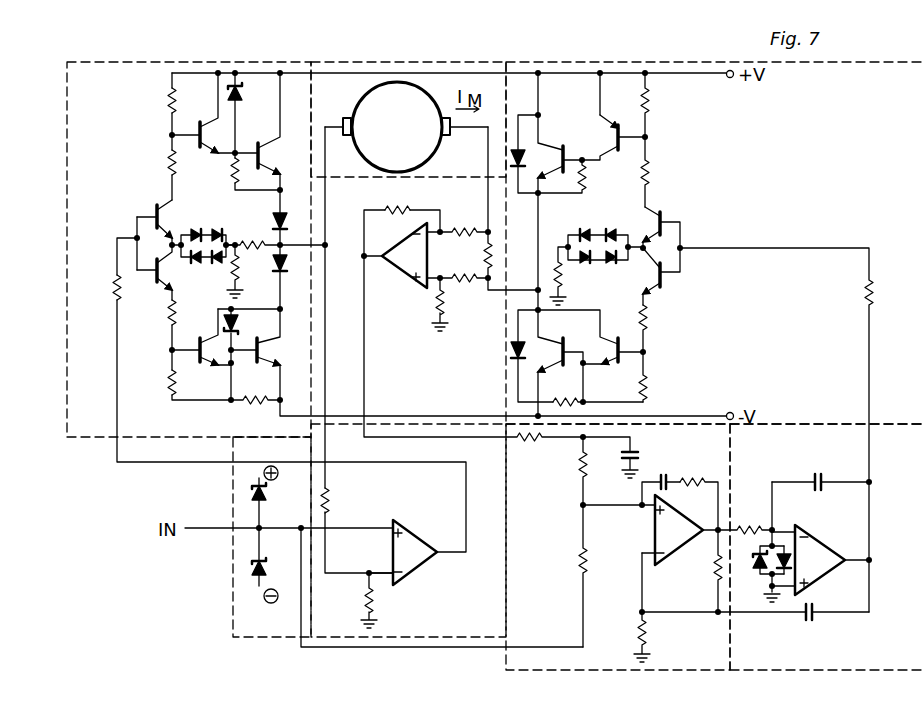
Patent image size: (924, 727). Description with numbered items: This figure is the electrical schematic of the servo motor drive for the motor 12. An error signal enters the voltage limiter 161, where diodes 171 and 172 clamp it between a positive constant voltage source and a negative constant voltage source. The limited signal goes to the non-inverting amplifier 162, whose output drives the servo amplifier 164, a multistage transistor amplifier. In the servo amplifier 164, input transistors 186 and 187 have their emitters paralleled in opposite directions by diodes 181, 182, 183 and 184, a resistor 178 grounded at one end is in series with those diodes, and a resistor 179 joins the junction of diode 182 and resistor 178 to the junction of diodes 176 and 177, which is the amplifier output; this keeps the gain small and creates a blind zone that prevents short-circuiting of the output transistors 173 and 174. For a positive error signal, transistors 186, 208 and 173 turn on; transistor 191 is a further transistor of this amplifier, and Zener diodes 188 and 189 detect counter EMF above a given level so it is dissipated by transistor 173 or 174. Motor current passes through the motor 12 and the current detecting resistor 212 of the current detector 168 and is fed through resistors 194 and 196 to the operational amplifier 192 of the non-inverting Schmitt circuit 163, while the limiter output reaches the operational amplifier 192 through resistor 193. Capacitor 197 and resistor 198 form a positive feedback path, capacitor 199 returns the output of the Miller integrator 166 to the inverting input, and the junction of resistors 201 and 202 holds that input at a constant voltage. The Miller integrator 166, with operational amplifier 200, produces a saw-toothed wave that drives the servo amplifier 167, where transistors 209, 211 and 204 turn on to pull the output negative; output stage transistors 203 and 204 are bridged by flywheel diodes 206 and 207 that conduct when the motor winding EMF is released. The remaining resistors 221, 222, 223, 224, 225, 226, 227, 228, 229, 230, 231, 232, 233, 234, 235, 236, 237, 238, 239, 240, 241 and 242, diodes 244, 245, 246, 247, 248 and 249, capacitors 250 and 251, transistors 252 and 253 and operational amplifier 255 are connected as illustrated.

The motor 12 is at (393, 80).
The voltage limiter circuit 161 is at (267, 644).
The non-inverting amplifier 162 is at (366, 642).
The non-inverting Schmitt trigger circuit 163 is at (658, 674).
The first servo amplifier 164 is at (100, 62).
The Miller integrator 166 is at (821, 674).
The second servo amplifier 167 is at (692, 62).
The current detector 168 is at (464, 62).
The diode 171 is at (252, 494).
The diode 172 is at (254, 576).
The transistor 173 is at (274, 148).
The transistor 174 is at (250, 344).
The diode 176 is at (290, 218).
The diode 177 is at (288, 264).
The resistor 178 is at (238, 278).
The resistor 179 is at (247, 240).
The diode 181 is at (192, 228).
The diode 182 is at (214, 228).
The diode 183 is at (192, 270).
The diode 184 is at (215, 268).
The input transistor 186 is at (154, 207).
The input transistor 187 is at (153, 264).
The Zener diode 188 is at (240, 80).
The Zener diode 189 is at (225, 324).
The transistor 191 is at (186, 350).
The operational amplifier 192 is at (656, 532).
The resistor 193 is at (578, 568).
The resistor 194 is at (515, 442).
The resistor 196 is at (577, 481).
The capacitor 197 is at (665, 478).
The resistor 198 is at (697, 475).
The capacitor 199 is at (812, 625).
The operational amplifier 200 is at (838, 542).
The resistor 201 is at (649, 636).
The resistor 202 is at (718, 584).
The output stage transistor 203 is at (567, 144).
The output stage transistor 204 is at (574, 347).
The flywheel diode 206 is at (508, 161).
The flywheel diode 207 is at (515, 360).
The transistor 208 is at (200, 120).
The transistor 209 is at (663, 282).
The transistor 211 is at (627, 349).
The current detecting resistor 212 is at (484, 262).
The resistor 221 is at (167, 98).
The resistor 222 is at (167, 156).
The resistor 223 is at (112, 286).
The resistor 224 is at (164, 316).
The resistor 225 is at (166, 390).
The resistor 226 is at (246, 151).
The resistor 227 is at (254, 398).
The resistor 228 is at (330, 498).
The resistor 229 is at (379, 603).
The resistor 230 is at (392, 208).
The resistor 231 is at (462, 230).
The resistor 232 is at (474, 286).
The resistor 233 is at (430, 305).
The resistor 234 is at (649, 108).
The resistor 235 is at (646, 168).
The resistor 236 is at (591, 168).
The resistor 237 is at (525, 294).
The resistor 238 is at (647, 314).
The resistor 239 is at (647, 386).
The resistor 240 is at (565, 402).
The resistor 241 is at (866, 293).
The resistor 242 is at (750, 524).
The diode 244 is at (579, 232).
The diode 245 is at (614, 232).
The diode 246 is at (562, 282).
The diode 247 is at (612, 270).
The diode 248 is at (760, 578).
The diode 249 is at (786, 545).
The capacitor 250 is at (822, 474).
The capacitor 251 is at (646, 454).
The transistor 252 is at (616, 124).
The transistor 253 is at (661, 212).
The operational amplifier 255 is at (417, 536).